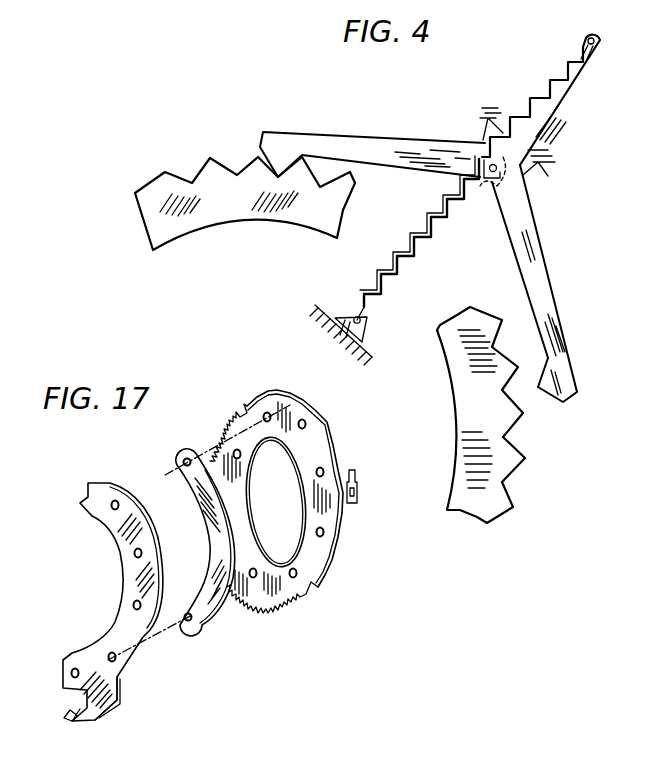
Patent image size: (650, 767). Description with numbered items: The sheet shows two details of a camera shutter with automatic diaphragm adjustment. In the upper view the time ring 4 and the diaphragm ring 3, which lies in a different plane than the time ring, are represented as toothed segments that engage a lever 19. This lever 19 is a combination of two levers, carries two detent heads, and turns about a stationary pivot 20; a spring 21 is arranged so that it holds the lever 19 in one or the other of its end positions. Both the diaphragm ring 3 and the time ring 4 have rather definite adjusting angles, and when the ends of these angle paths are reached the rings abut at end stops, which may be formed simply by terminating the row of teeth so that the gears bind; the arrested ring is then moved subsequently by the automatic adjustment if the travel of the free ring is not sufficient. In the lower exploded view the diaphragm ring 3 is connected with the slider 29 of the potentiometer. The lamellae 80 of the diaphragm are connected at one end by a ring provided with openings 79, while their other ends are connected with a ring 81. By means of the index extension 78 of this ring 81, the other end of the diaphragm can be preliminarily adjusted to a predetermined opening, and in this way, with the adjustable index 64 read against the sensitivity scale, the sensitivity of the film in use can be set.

In FIG. 4, the diaphragm ring 3 is at (230, 213).
In FIG. 17, the diaphragm ring 3 is at (305, 501).
In FIG. 4, the time ring 4 is at (472, 402).
In FIG. 4, the lever 19 is at (403, 150).
In FIG. 4, the stationary pivot 20 is at (517, 173).
In FIG. 4, the spring 21 is at (405, 247).
In FIG. 17, the slider of the potentiometer 29 is at (357, 474).
In FIG. 17, the adjustable index of the sensitivity scale 64 is at (68, 716).
In FIG. 17, the index extension 78 is at (108, 695).
In FIG. 17, the openings 79 is at (324, 468).
In FIG. 17, the lamellae of the diaphragm 80 is at (210, 605).
In FIG. 17, the ring 81 is at (104, 602).